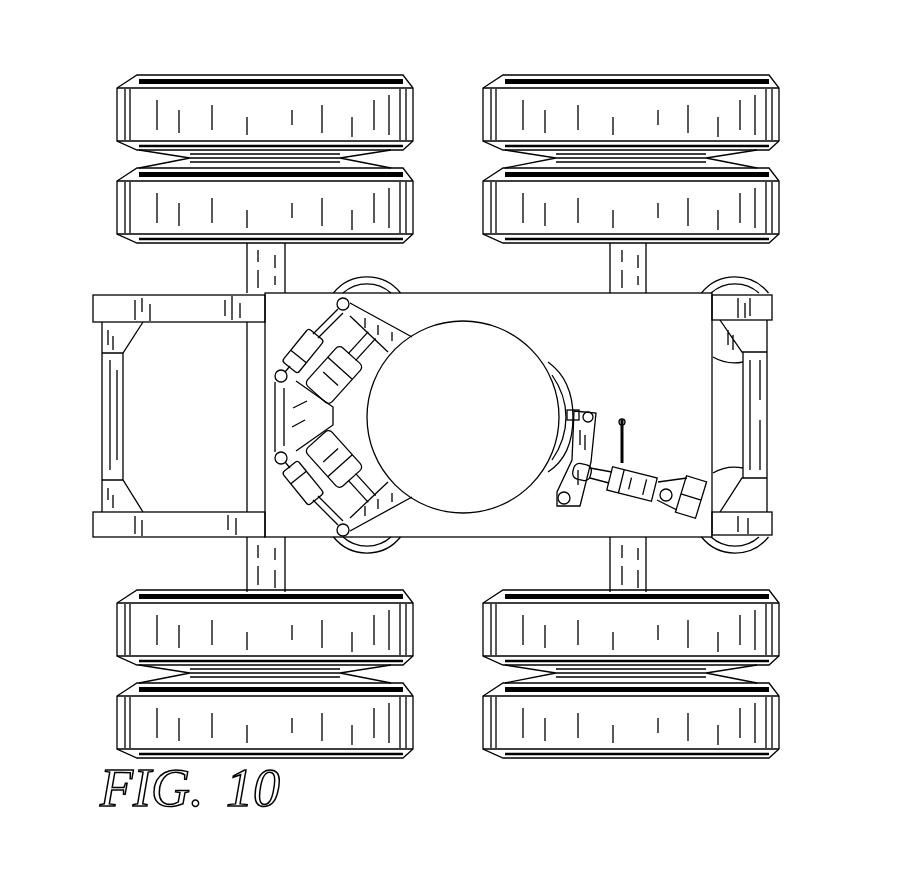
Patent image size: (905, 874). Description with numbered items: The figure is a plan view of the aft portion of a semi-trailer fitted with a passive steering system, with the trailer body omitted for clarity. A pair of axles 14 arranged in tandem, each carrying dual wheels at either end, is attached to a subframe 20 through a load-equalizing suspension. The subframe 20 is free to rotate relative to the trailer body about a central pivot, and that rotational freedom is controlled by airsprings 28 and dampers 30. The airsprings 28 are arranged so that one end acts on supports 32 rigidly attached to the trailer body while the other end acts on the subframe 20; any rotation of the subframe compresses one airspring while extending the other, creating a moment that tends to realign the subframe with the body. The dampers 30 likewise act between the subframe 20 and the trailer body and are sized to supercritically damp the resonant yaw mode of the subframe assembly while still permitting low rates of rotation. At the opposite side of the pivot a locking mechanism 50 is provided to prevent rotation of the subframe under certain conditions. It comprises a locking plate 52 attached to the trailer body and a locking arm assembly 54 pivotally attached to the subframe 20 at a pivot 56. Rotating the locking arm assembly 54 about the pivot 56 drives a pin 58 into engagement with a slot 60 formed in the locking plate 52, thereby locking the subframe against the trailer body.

The axles 14 is at (284, 272).
The subframe 20 is at (102, 408).
The airsprings 28 is at (318, 372).
The dampers 30 is at (293, 488).
The supports 32 is at (378, 510).
The locking mechanism 50 is at (624, 437).
The locking plate 52 is at (575, 392).
The locking arm assembly 54 is at (589, 486).
The pivot 56 is at (557, 486).
The pin 58 is at (598, 420).
The slot 60 is at (573, 413).